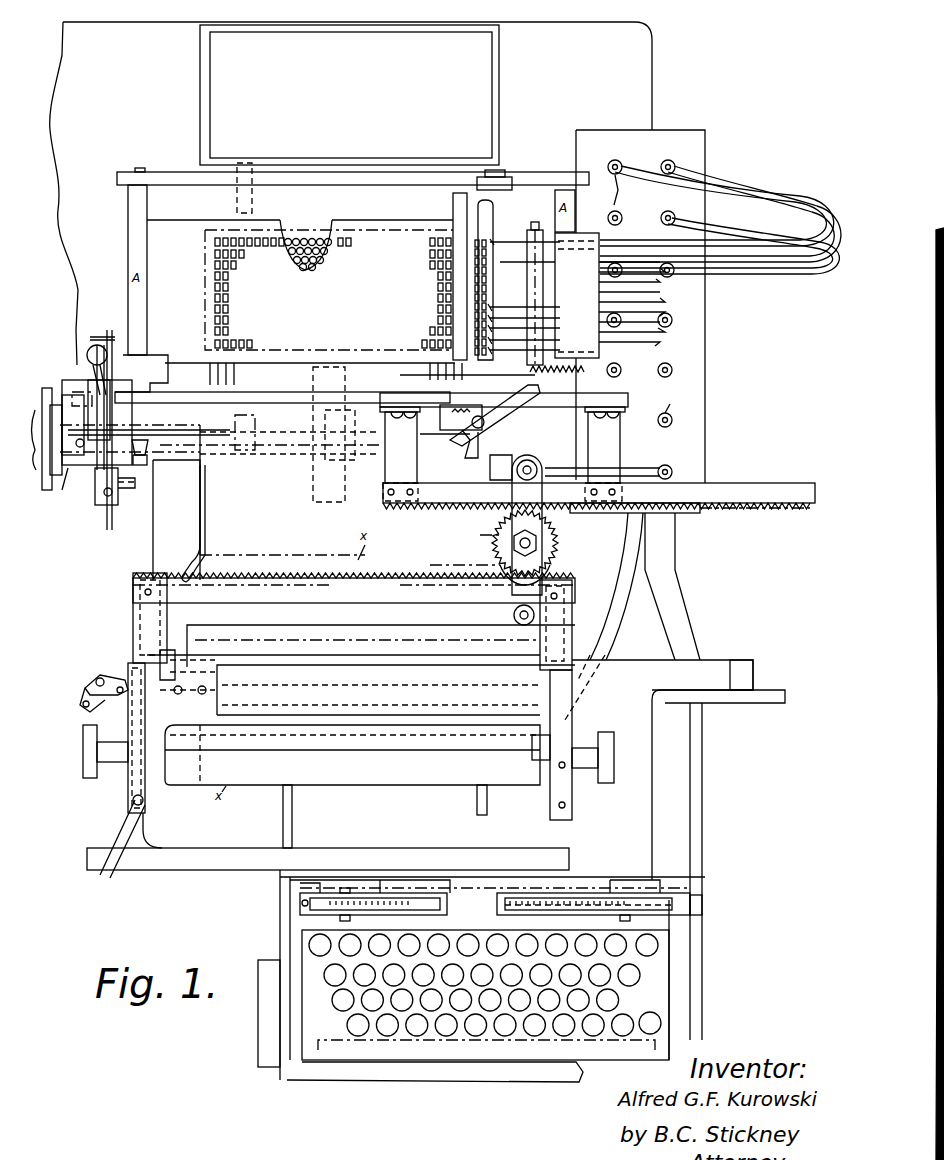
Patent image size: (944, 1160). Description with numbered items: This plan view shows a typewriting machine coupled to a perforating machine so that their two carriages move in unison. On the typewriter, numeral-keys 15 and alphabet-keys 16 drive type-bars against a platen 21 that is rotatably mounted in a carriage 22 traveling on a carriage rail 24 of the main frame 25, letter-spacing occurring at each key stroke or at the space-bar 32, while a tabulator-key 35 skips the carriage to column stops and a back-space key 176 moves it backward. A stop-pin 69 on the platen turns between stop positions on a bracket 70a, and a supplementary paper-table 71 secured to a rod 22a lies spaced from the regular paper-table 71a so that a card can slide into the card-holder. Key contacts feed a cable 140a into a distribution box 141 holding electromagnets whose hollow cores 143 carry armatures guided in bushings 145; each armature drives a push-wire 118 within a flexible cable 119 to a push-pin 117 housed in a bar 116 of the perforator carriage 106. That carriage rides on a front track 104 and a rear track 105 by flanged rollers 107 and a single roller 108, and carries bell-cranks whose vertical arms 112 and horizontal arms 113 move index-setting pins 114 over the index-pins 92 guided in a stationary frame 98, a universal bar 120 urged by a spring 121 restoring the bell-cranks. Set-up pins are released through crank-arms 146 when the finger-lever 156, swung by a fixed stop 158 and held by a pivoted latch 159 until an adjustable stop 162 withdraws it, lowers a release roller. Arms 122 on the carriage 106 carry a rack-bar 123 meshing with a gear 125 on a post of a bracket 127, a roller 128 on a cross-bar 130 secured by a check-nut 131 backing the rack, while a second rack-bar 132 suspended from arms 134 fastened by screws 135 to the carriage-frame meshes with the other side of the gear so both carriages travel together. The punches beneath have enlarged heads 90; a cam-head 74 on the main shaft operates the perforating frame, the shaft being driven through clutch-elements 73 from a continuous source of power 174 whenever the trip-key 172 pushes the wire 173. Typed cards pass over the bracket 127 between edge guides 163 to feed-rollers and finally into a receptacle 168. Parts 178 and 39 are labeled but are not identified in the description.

The receptacle 168 is at (499, 75).
The single roller 108 is at (512, 182).
The rear track 105 is at (380, 180).
The enlarged heads 90 is at (310, 222).
The bushing 145 is at (628, 190).
The push-wire 118 is at (588, 240).
The flexible cable 119 is at (660, 336).
The index-pins 92 is at (222, 305).
The stationary frame 98 is at (301, 282).
The carriage 106 is at (453, 293).
The index-setting pin 114 is at (498, 276).
The horizontal arm 113 is at (524, 318).
The bar 116 is at (577, 295).
The push-pins 117 is at (566, 288).
The universal bar 120 is at (566, 307).
The vertically-disposed arm 112 is at (566, 328).
The distribution box 141 is at (700, 372).
The clutch-elements 73 is at (90, 382).
The continuous source of power 174 is at (55, 380).
The crank-arm 146 is at (205, 375).
The front track 104 is at (275, 392).
The flanged rollers 107 is at (395, 393).
The spring 121 is at (584, 366).
The link 178 is at (312, 415).
The finger-lever 156 is at (474, 417).
The fixed stop 158 is at (520, 430).
The roller 128 is at (540, 462).
The adjustable stop 162 is at (154, 452).
The arms 122 is at (410, 462).
The pivoted latch 159 is at (465, 458).
The rack-bar 123 is at (599, 498).
The cam-head 74 is at (320, 480).
The wire 173 is at (125, 490).
The bracket 127 is at (176, 520).
The edge guides 163 is at (205, 520).
The check-nut 131 is at (514, 543).
The gear 125 is at (560, 543).
The cross-bar 130 is at (530, 568).
The second rack-bar 132 is at (354, 588).
The regular paper-table 71a is at (352, 630).
The arms 134 is at (352, 621).
The rod 22a is at (500, 667).
The cable 140a is at (608, 637).
The screws 135 is at (165, 681).
The supplementary paper-table 71 is at (396, 690).
The carriage rail 24 is at (640, 690).
The stop-pin 69 is at (352, 755).
The platen 21 is at (185, 790).
The bracket 70a is at (565, 790).
The carriage 22 is at (165, 860).
The numeral-keys 15 is at (466, 942).
The back-space key 176 is at (309, 945).
The tabulator-key 35 is at (658, 945).
The alphabet-keys 16 is at (636, 997).
The trip-key 172 is at (661, 1023).
The carriage return key 39 is at (262, 1046).
The main frame 25 is at (440, 1062).
The space-bar 32 is at (585, 1065).
The hollow core 143 is at (678, 402).